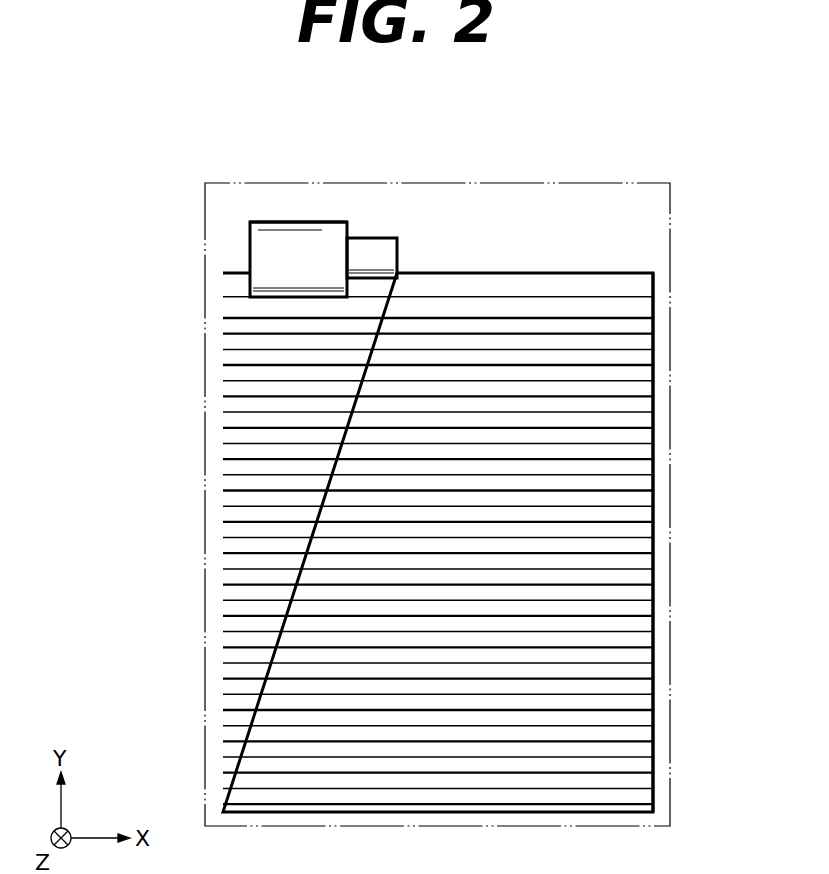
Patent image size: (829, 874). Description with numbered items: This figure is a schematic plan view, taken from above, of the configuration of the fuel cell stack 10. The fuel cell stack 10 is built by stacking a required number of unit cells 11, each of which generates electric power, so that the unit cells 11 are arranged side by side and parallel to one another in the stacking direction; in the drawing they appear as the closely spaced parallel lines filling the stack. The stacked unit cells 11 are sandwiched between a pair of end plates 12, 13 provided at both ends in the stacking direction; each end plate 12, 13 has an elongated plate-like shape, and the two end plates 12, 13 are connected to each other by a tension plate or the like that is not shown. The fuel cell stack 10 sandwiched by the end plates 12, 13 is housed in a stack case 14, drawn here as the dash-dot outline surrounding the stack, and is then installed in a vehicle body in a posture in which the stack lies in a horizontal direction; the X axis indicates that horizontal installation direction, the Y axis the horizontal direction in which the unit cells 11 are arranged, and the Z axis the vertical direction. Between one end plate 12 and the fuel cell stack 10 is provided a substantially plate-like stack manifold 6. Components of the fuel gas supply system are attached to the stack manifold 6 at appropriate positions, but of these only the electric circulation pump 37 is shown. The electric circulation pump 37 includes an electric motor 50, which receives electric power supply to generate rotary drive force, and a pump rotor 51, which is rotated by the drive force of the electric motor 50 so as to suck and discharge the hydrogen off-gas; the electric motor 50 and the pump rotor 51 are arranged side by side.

The stack case 14 is at (630, 183).
The fuel cell stack 10 is at (655, 525).
The unit cell 11 is at (655, 437).
The end plate 12 is at (638, 287).
The end plate 13 is at (640, 797).
The stack manifold 6 is at (635, 308).
The electric motor 50 is at (258, 262).
The pump rotor 51 is at (363, 250).
The electric circulation pump 37 is at (296, 222).